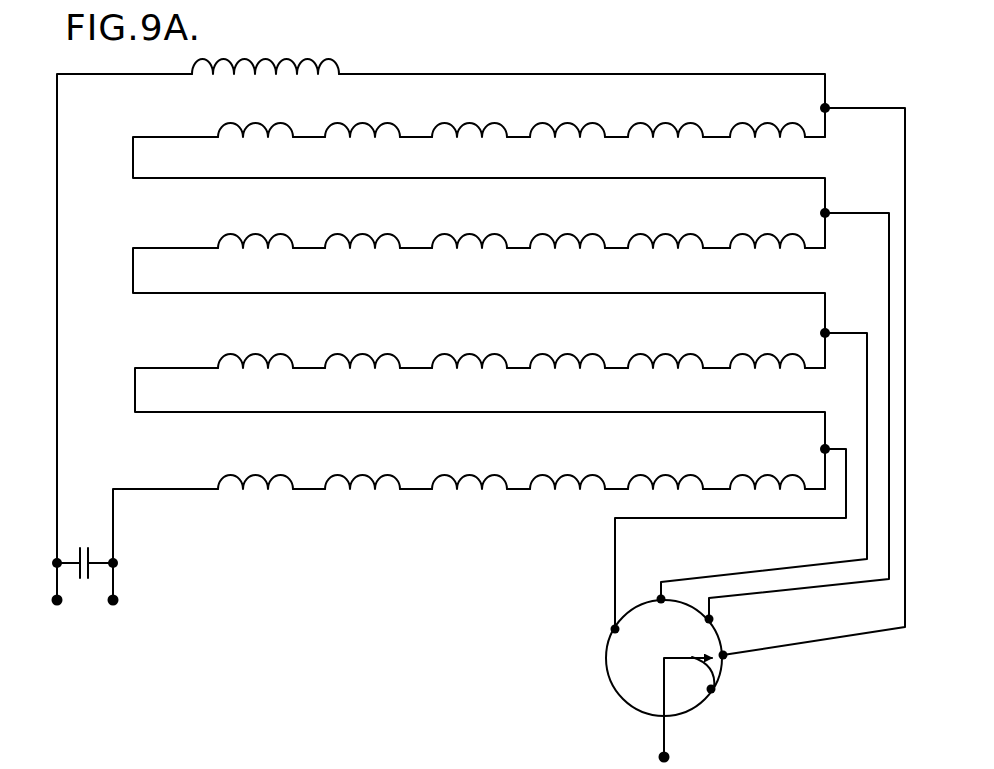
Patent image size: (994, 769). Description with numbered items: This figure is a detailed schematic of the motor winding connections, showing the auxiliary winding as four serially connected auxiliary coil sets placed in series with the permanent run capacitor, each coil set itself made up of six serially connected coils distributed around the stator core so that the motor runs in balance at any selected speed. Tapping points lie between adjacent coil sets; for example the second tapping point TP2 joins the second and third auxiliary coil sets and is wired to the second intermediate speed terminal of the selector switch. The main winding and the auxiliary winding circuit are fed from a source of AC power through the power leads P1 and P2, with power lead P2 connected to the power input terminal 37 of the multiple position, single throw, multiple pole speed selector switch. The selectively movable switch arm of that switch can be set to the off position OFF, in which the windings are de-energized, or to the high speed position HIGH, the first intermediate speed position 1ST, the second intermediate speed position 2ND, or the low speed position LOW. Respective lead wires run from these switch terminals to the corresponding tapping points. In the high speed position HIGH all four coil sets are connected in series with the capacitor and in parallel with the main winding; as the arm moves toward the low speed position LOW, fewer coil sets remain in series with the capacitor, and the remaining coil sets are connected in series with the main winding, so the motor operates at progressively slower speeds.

The second tapping point TP2 is at (828, 337).
The power lead P1 is at (85, 602).
The power lead P2 is at (685, 746).
The power input terminal 37 is at (659, 718).
The low speed position LOW is at (586, 630).
The second intermediate speed position 2ND is at (661, 596).
The first intermediate speed position 1ST is at (731, 617).
The high speed position HIGH is at (752, 666).
The off position OFF is at (711, 692).